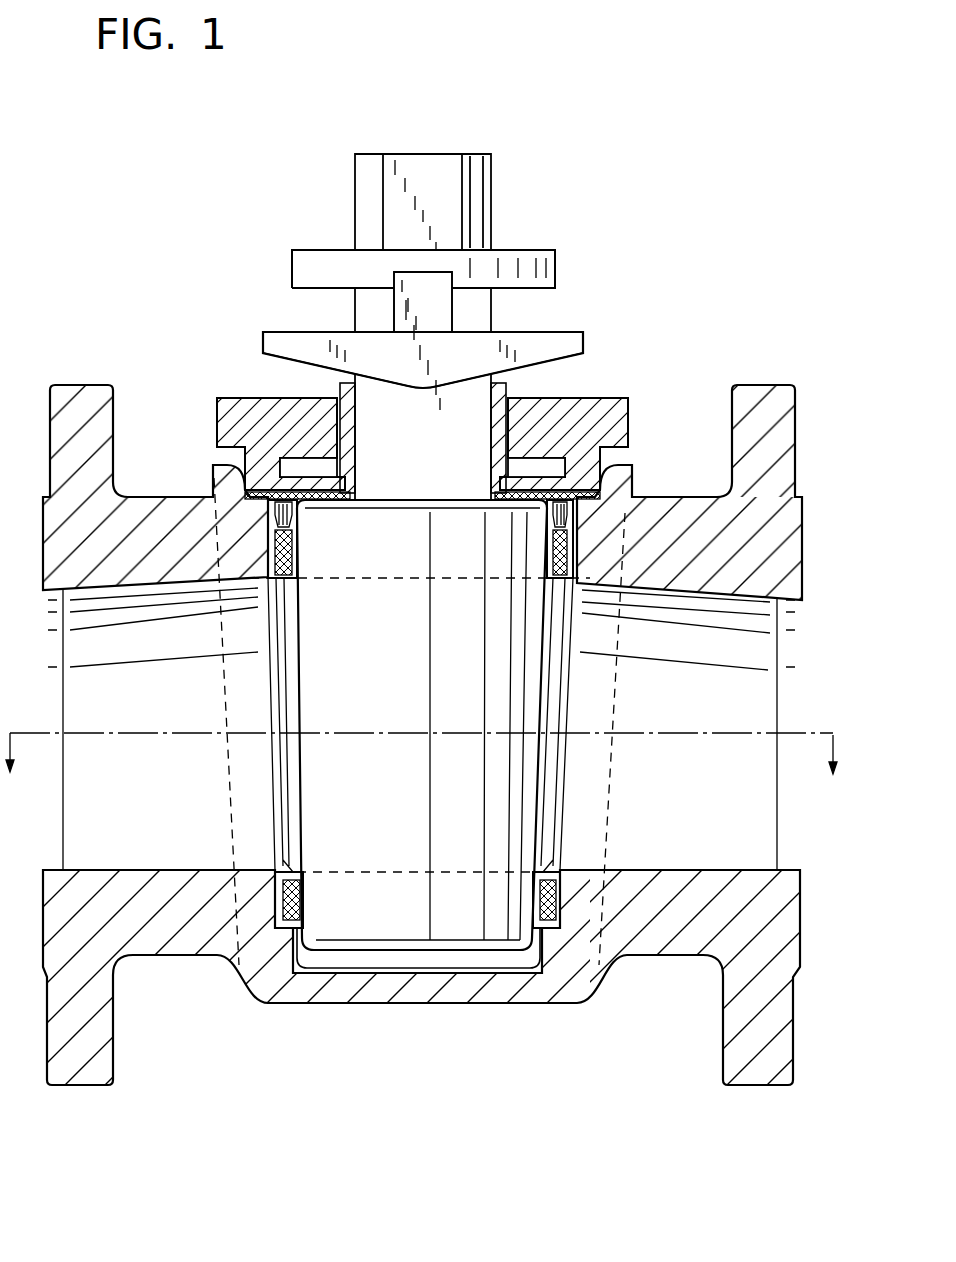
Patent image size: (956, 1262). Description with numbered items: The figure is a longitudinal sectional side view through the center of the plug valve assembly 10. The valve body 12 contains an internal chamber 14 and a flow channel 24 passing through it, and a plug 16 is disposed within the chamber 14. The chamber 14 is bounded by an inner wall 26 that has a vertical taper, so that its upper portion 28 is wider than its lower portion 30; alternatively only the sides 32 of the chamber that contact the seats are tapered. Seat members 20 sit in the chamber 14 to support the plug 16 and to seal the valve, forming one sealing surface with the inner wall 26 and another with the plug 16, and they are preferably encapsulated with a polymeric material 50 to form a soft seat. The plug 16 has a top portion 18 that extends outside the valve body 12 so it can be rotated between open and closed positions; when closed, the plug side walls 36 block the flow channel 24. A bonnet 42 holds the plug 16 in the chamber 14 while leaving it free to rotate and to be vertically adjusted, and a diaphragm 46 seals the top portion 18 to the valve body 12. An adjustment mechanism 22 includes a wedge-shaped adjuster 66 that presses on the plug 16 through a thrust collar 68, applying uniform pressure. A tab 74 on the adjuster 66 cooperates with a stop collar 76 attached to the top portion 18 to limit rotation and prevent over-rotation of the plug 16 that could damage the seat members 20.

The plug valve assembly 10 is at (688, 238).
The valve body 12 is at (797, 405).
The internal chamber 14 is at (382, 962).
The plug 16 is at (490, 948).
The top portion 18 is at (386, 454).
The seat members 20 is at (577, 533).
The adjustment mechanism 22 is at (243, 351).
The flow channel 24 is at (129, 804).
The inner wall 26 is at (297, 957).
The upper portion 28 is at (300, 518).
The lower portion 30 is at (417, 959).
The sides 32 is at (268, 697).
The plug side walls 36 is at (512, 720).
The bonnet 42 is at (605, 397).
The diaphragm 46 is at (253, 505).
The polymeric material 50 is at (567, 875).
The adjuster 66 is at (383, 366).
The thrust collar 68 is at (310, 363).
The tab 74 is at (420, 280).
The stop collar 76 is at (573, 264).